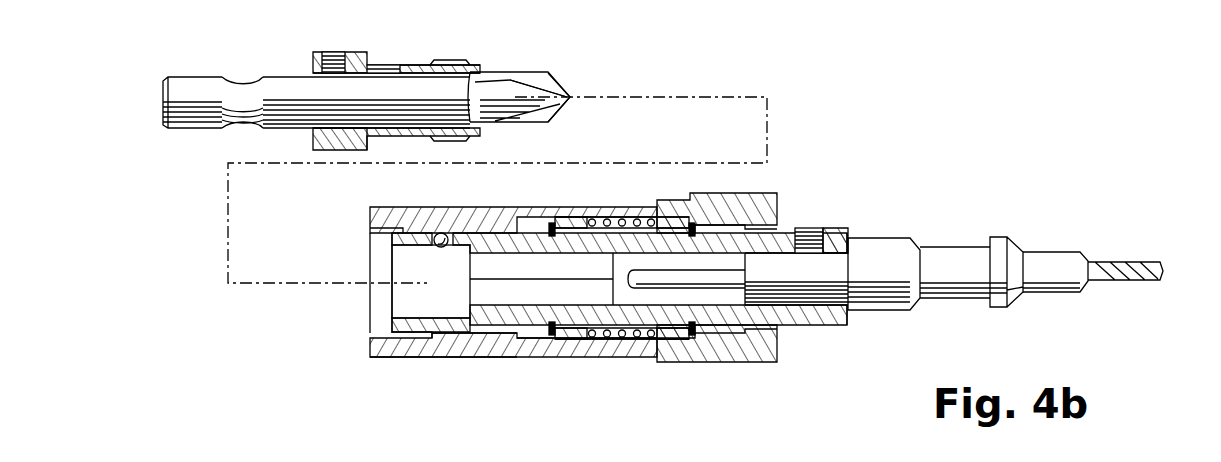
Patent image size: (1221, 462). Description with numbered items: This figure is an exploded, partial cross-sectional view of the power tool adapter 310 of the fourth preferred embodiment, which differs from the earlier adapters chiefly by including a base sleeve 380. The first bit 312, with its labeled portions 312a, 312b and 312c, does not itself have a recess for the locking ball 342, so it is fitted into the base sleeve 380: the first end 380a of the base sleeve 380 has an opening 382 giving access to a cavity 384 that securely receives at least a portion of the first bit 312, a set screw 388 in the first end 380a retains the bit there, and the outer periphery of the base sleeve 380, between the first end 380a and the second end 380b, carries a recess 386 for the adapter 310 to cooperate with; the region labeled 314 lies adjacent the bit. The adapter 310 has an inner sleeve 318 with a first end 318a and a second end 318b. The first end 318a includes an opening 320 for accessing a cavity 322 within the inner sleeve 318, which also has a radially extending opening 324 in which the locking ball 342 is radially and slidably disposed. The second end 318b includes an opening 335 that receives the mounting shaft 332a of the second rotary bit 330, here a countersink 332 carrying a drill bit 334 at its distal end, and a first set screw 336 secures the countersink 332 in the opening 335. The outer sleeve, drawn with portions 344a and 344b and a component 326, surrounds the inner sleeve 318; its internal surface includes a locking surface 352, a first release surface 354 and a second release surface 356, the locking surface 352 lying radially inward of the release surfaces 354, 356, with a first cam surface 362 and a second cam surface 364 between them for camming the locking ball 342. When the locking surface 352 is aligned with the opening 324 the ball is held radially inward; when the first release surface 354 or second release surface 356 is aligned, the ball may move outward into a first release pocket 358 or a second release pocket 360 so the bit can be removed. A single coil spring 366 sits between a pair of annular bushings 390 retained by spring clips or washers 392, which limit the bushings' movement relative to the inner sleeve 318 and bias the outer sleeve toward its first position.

The adapter 310 is at (888, 137).
The first bit 312 is at (262, 82).
The drill bit shank 312a is at (165, 112).
The drill bit body 312b is at (460, 125).
The drill bit tip 312c is at (553, 110).
The phantom outline of bit position 314 is at (548, 74).
The inner sleeve 318 is at (535, 325).
The first end of inner sleeve 318a is at (400, 318).
The second end of inner sleeve 318b is at (806, 330).
The opening 320 is at (398, 300).
The cavity 322 is at (473, 335).
The radially extending opening 324 is at (437, 234).
The outer sleeve 326 is at (728, 193).
The second rotary bit 330 is at (1020, 248).
The countersink 332 is at (1083, 288).
The mounting shaft 332a is at (840, 258).
The drill bit 334 is at (1127, 258).
The opening 335 is at (840, 327).
The first set screw 336 is at (807, 226).
The locking ball 342 is at (450, 248).
The housing bottom rear portion 344a is at (370, 358).
The housing bottom front portion 344b is at (647, 353).
The locking surface 352 is at (447, 335).
The first release surface 354 is at (460, 233).
The second release surface 356 is at (398, 232).
The first release pocket 358 is at (503, 215).
The second release pocket 360 is at (393, 228).
The first cam surface 362 is at (450, 337).
The second cam surface 364 is at (427, 343).
The coil spring 366 is at (613, 342).
The base sleeve 380 is at (350, 151).
The first end of base sleeve 380a is at (283, 88).
The second end of base sleeve 380b is at (473, 67).
The opening 382 is at (322, 131).
The cavity 384 is at (420, 63).
The recess 386 is at (447, 65).
The set screw 388 is at (332, 53).
The annular bushings 390 is at (690, 340).
The spring clips 392 is at (745, 362).